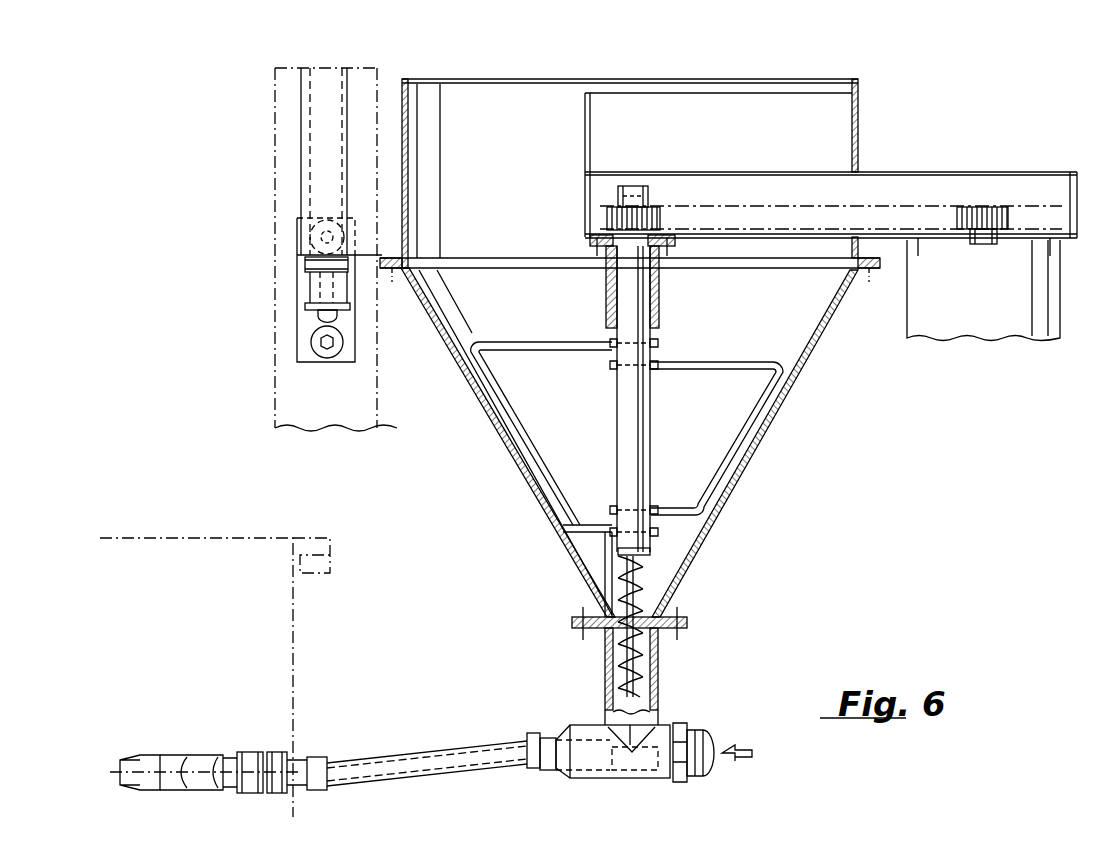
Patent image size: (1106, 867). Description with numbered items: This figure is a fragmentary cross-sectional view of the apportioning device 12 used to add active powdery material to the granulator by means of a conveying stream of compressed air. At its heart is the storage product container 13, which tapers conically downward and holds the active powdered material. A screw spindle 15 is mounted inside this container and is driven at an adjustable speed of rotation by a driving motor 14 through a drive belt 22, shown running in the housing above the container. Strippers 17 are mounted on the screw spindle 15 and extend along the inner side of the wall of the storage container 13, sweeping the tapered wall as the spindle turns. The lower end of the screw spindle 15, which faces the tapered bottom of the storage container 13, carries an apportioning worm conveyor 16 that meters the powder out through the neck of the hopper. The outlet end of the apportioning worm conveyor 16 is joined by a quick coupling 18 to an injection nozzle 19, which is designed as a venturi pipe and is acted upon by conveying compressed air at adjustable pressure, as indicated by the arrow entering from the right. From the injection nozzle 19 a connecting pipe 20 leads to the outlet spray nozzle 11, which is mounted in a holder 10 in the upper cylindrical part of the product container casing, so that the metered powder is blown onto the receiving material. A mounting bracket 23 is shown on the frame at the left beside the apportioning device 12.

The holder for spray nozzles 10 is at (275, 757).
The outlet spray nozzle 11 is at (134, 760).
The apportioning device 12 is at (880, 510).
The storage product container 13 is at (491, 403).
The driving motor 14 is at (1042, 303).
The screw spindle 15 is at (623, 427).
The apportioning worm conveyor 16 is at (613, 663).
The strippers 17 is at (538, 462).
The quick coupling 18 is at (690, 625).
The injection nozzle 19 is at (636, 760).
The connecting pipe 20 is at (435, 760).
The drive belt 22 is at (877, 213).
The mounting bracket 23 is at (291, 273).